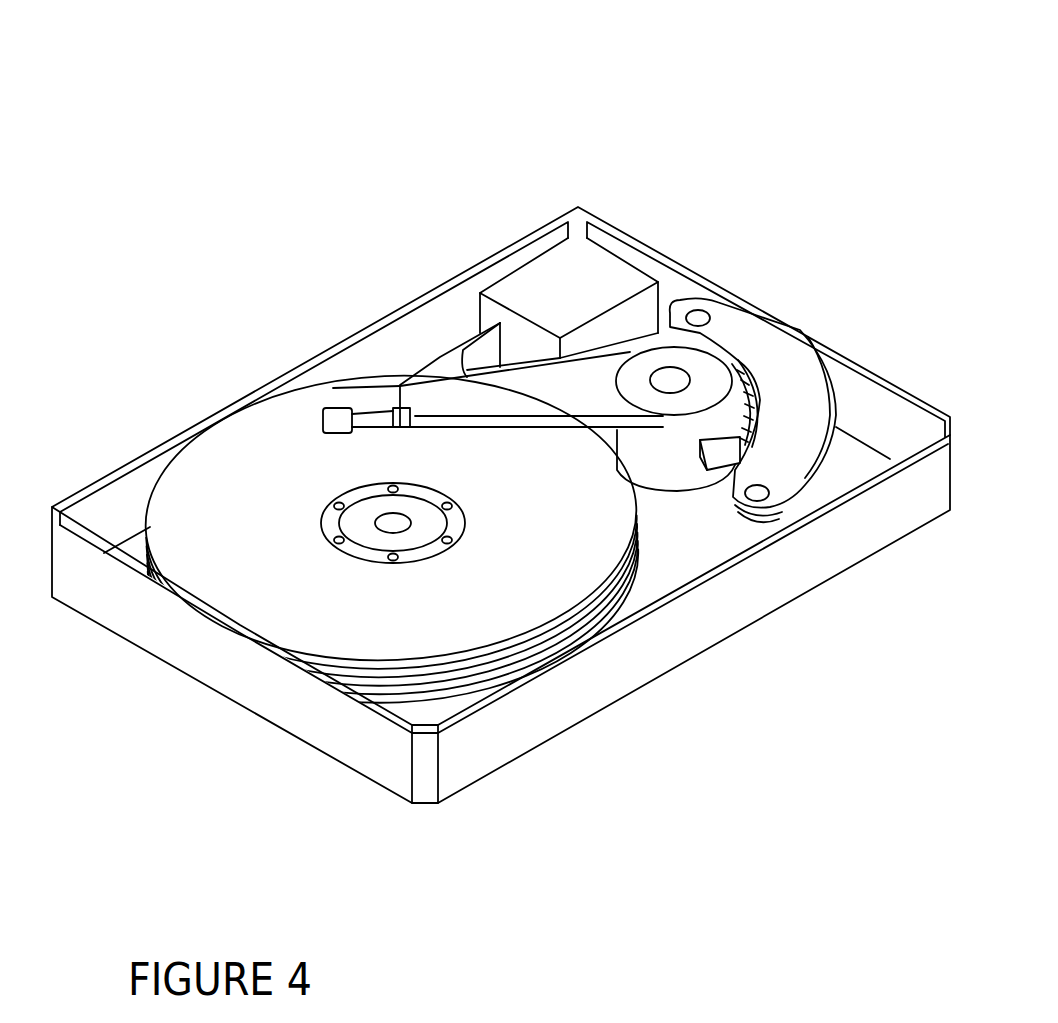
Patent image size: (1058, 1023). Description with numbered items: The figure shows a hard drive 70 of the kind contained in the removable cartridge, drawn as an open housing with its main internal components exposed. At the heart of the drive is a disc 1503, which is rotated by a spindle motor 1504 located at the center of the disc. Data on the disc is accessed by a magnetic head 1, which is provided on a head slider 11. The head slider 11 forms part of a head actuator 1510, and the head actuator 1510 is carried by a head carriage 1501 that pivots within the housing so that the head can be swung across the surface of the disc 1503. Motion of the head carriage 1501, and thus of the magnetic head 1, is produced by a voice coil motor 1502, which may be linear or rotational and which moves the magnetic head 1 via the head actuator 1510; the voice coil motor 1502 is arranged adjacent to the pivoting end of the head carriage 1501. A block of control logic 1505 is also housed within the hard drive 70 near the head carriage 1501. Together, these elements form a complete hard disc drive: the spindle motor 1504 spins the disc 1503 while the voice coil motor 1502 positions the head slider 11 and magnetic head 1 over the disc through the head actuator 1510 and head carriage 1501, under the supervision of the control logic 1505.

The hard drive 70 is at (805, 100).
The disc 1503 is at (205, 430).
The spindle motor 1504 is at (247, 480).
The magnetic head 1 is at (357, 507).
The control logic 1505 is at (540, 287).
The head carriage 1501 is at (575, 387).
The head actuator 1510 is at (380, 407).
The head slider 11 is at (336, 408).
The voice coil motor 1502 is at (783, 387).